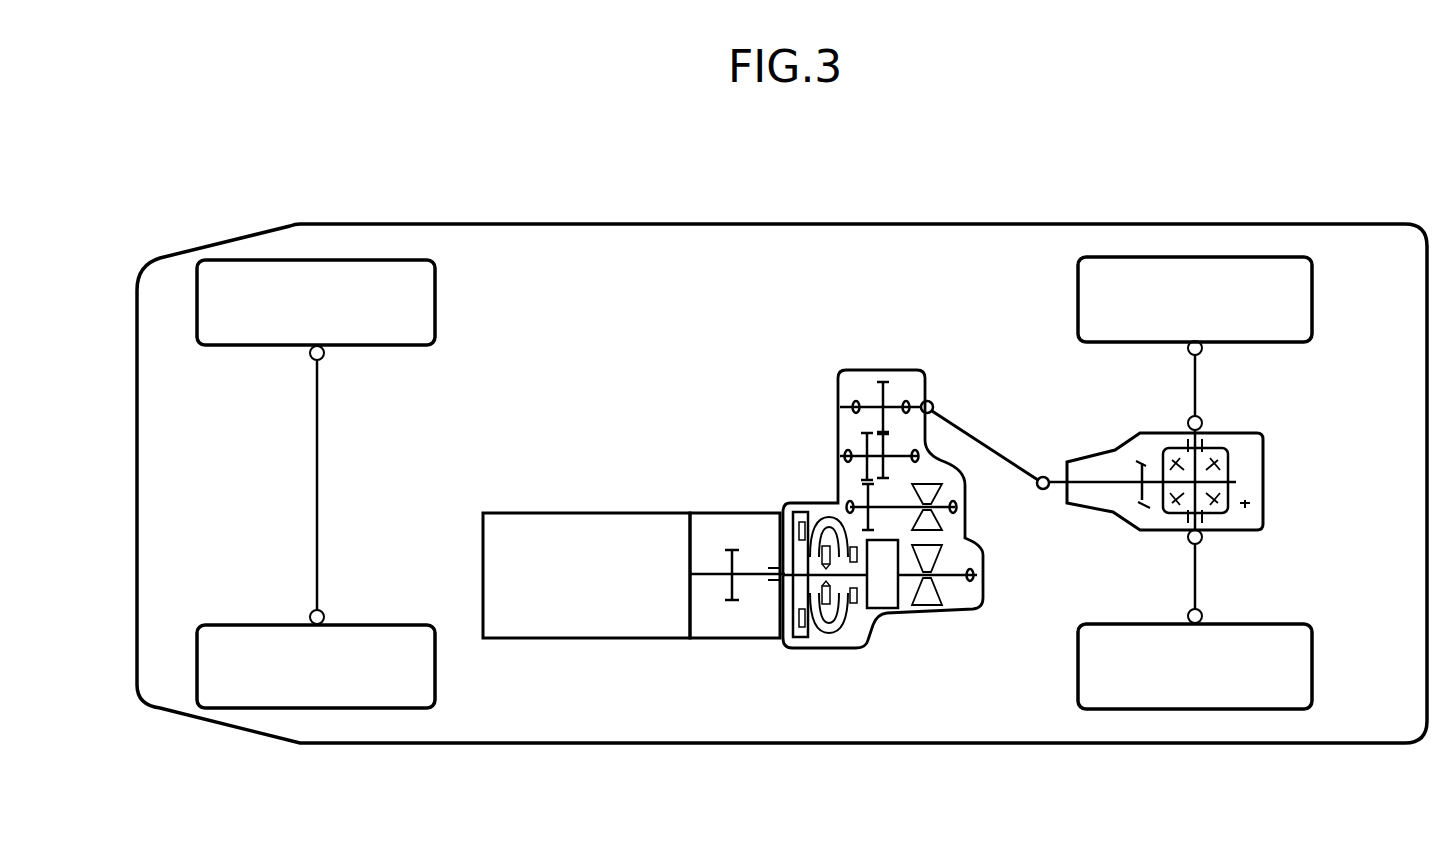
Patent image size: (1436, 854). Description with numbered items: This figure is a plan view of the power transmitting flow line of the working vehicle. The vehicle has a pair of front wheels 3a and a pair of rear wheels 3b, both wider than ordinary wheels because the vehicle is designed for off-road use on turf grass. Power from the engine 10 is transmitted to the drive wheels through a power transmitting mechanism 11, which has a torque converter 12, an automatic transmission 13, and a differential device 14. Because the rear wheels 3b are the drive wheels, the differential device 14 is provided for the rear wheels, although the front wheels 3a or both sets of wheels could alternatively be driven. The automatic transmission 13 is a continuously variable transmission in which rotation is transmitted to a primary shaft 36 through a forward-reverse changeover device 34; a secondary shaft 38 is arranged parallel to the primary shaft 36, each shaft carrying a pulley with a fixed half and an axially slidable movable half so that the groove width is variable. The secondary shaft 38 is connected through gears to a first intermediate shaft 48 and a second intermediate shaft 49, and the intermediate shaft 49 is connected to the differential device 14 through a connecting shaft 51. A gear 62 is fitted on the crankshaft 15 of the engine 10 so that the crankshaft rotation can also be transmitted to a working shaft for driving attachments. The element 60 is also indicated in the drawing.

The front wheels 3a is at (385, 325).
The rear wheels 3b is at (1292, 294).
The engine 10 is at (563, 530).
The power transmitting mechanism 11 is at (866, 501).
The torque converter 12 is at (806, 646).
The automatic transmission 13 is at (957, 601).
The differential device 14 is at (1279, 464).
The crankshaft 15 is at (712, 573).
The forward-reverse changeover device 34 is at (882, 597).
The primary shaft 36 is at (957, 562).
The secondary shaft 38 is at (943, 495).
The first intermediate shaft 48 is at (898, 455).
The second intermediate shaft 49 is at (892, 400).
The connecting shaft 51 is at (998, 447).
The clutch piston 60 is at (852, 602).
The gear 62 is at (727, 603).